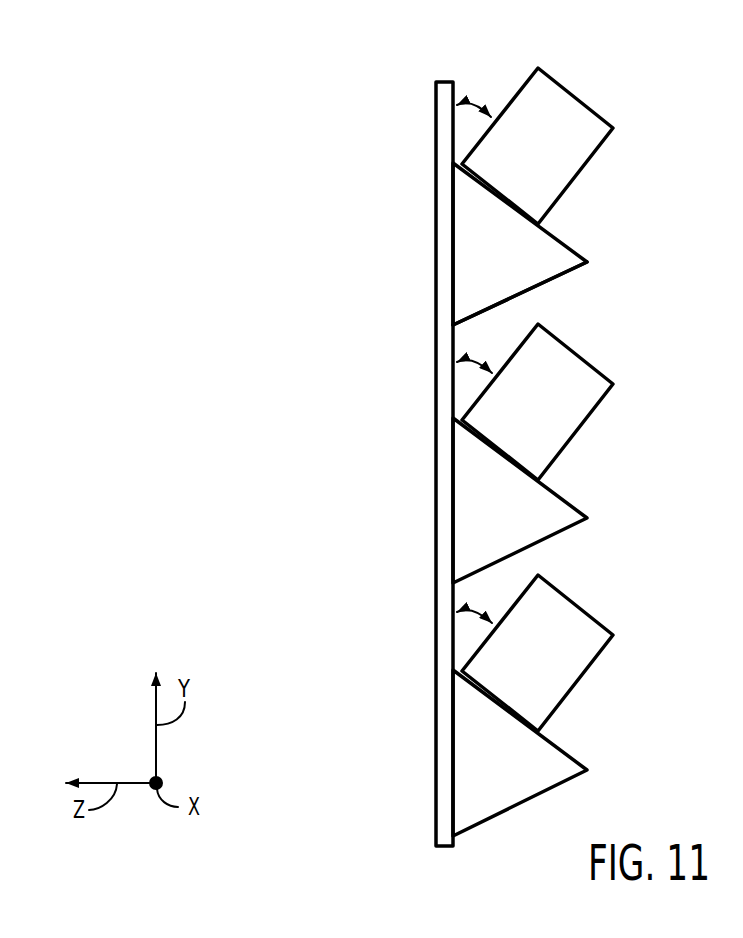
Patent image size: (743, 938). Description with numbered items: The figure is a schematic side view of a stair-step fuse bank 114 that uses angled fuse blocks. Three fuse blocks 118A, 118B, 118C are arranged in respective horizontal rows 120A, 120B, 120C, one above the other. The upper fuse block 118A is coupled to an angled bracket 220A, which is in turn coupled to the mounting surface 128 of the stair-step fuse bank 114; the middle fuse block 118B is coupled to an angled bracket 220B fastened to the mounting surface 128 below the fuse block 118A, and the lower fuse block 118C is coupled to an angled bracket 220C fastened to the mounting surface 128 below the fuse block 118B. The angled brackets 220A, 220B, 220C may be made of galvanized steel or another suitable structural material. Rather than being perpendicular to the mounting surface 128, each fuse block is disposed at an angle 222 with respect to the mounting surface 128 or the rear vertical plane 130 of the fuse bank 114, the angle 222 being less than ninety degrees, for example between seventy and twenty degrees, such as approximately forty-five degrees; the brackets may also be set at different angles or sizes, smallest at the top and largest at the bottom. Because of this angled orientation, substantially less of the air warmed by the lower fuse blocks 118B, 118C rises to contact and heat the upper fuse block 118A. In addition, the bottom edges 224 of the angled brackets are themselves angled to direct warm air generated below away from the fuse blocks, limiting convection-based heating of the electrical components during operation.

The stair-step fuse bank 114 is at (592, 71).
The mounting surface 128 is at (482, 60).
The rear vertical plane 130 is at (457, 92).
The fuse block 118A is at (565, 143).
The fuse block 118B is at (565, 401).
The fuse block 118C is at (565, 653).
The horizontal row 120A is at (621, 208).
The horizontal row 120B is at (621, 458).
The horizontal row 120C is at (621, 710).
The angled bracket 220A is at (532, 263).
The angled bracket 220B is at (532, 520).
The angled bracket 220C is at (532, 770).
The angle 222 is at (467, 110).
The bottom edge 224 is at (566, 280).